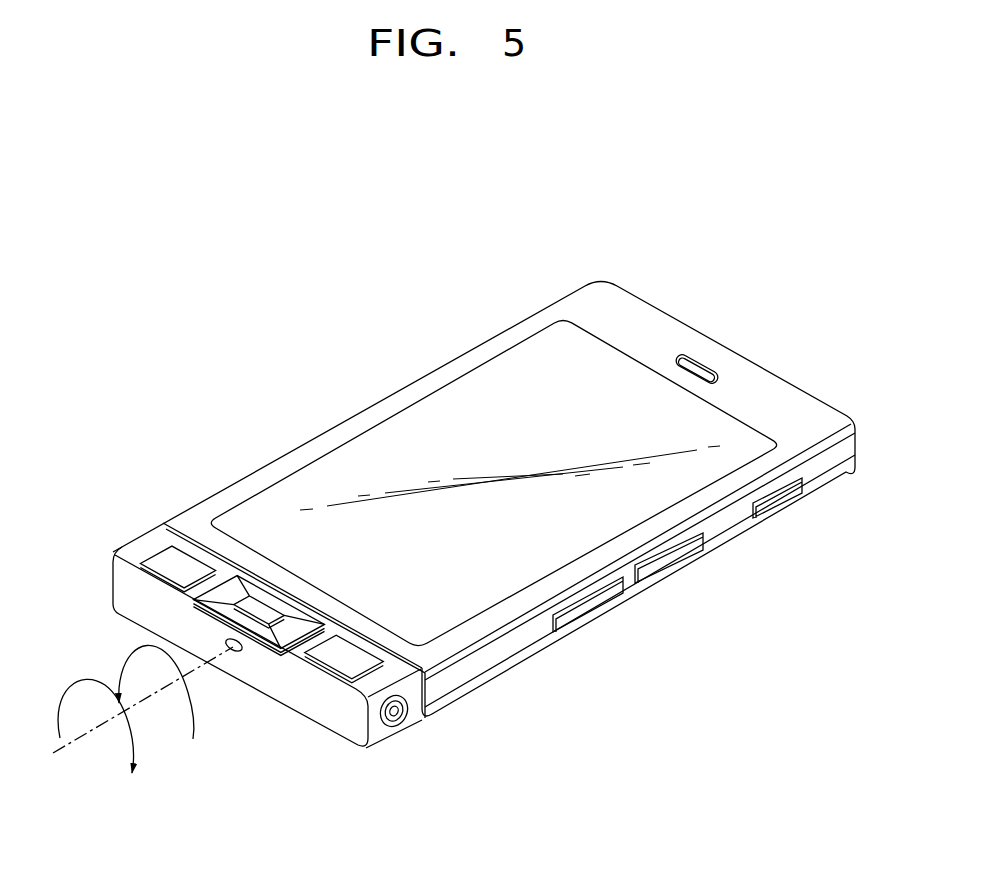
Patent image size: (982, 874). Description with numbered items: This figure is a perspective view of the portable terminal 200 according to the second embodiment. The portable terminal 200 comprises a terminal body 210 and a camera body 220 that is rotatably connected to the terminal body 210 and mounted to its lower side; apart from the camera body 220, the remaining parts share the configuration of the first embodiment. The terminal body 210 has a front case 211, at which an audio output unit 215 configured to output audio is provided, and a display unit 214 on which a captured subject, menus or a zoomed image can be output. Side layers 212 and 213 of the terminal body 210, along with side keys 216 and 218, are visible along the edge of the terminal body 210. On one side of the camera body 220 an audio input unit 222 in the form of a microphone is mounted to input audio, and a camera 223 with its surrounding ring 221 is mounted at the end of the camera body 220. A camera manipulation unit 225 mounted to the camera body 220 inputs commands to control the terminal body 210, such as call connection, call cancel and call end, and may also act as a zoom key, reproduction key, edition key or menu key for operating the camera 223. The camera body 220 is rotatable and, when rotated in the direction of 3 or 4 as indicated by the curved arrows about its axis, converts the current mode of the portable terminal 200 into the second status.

The portable terminal 200 is at (150, 233).
The terminal body 210 is at (484, 511).
The front case 211 is at (517, 623).
The second case layer of first body 212 is at (495, 657).
The third case layer of first body 213 is at (473, 687).
The display unit 214 is at (463, 388).
The audio output unit 215 is at (703, 367).
The side keys 216 is at (612, 598).
The interface / side key 218 is at (777, 500).
The camera body 220 is at (133, 533).
The camera 221 is at (418, 754).
The audio input unit 222 is at (236, 653).
The camera 223 is at (398, 714).
The camera manipulation unit 225 is at (220, 597).
The rotation direction 3 is at (112, 731).
The rotation direction 4 is at (172, 697).